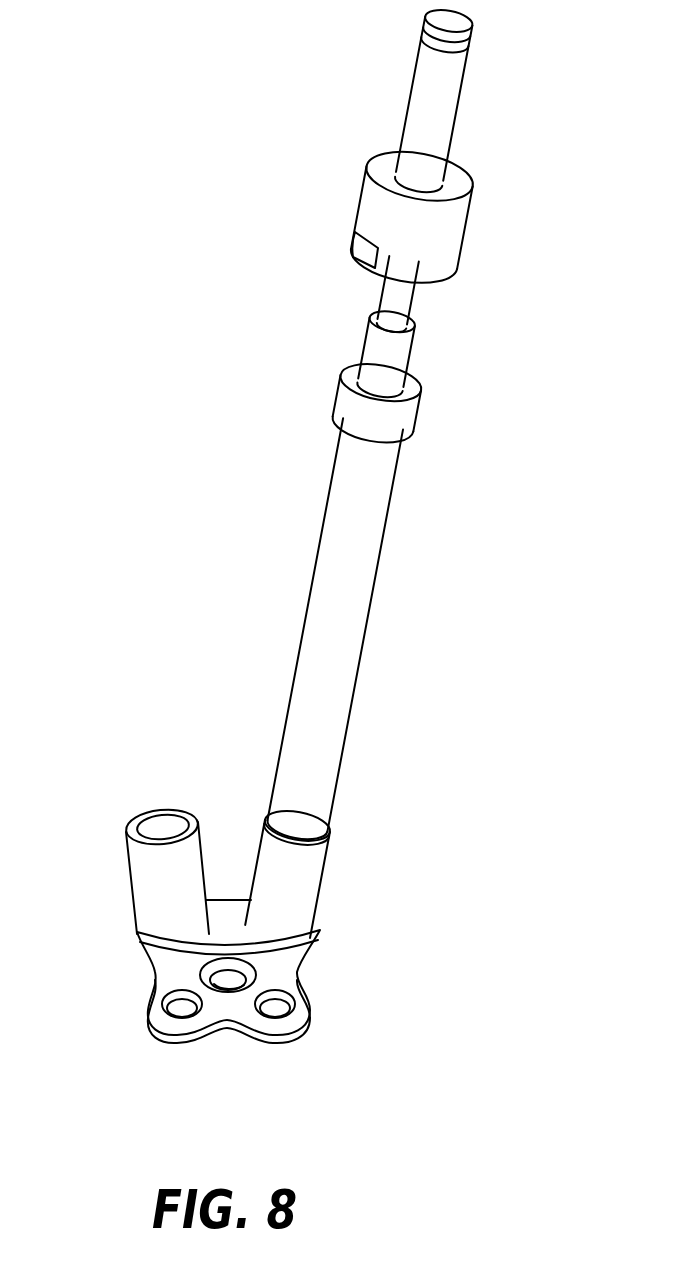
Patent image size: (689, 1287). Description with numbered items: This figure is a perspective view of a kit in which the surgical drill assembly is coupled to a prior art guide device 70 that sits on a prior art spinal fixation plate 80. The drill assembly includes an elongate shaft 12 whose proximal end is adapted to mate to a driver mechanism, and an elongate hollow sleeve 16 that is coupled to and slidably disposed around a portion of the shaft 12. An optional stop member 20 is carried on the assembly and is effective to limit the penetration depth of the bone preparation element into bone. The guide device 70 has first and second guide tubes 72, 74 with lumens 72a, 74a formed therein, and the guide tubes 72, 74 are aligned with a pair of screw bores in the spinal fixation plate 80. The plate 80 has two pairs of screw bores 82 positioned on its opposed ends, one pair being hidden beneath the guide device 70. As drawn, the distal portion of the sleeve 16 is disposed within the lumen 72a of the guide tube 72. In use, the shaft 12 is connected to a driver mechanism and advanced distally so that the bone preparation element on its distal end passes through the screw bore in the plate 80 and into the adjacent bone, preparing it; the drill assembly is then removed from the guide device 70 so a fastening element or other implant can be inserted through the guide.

The elongate shaft 12 is at (410, 358).
The hollow sleeve 16 is at (367, 552).
The stop member 20 is at (453, 236).
The guide device 70 is at (290, 921).
The first guide tube 72 is at (342, 851).
The lumen 72a is at (340, 823).
The second guide tube 74 is at (133, 834).
The lumen 74a is at (158, 830).
The spinal fixation plate 80 is at (270, 1018).
The screw bores 82 is at (273, 1010).